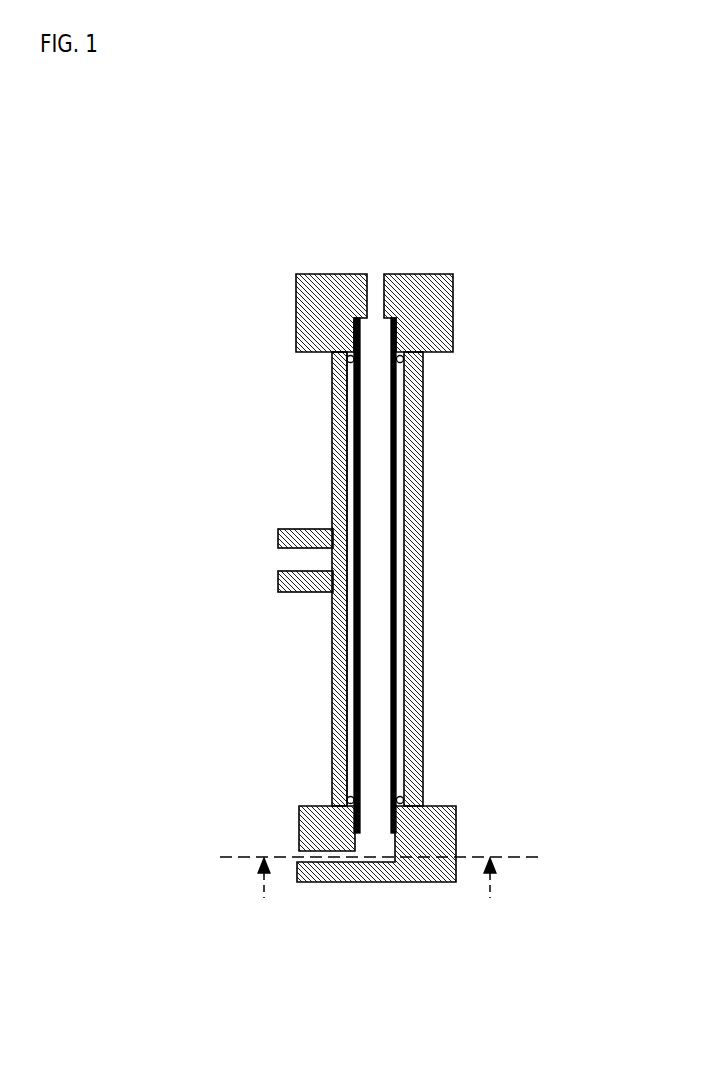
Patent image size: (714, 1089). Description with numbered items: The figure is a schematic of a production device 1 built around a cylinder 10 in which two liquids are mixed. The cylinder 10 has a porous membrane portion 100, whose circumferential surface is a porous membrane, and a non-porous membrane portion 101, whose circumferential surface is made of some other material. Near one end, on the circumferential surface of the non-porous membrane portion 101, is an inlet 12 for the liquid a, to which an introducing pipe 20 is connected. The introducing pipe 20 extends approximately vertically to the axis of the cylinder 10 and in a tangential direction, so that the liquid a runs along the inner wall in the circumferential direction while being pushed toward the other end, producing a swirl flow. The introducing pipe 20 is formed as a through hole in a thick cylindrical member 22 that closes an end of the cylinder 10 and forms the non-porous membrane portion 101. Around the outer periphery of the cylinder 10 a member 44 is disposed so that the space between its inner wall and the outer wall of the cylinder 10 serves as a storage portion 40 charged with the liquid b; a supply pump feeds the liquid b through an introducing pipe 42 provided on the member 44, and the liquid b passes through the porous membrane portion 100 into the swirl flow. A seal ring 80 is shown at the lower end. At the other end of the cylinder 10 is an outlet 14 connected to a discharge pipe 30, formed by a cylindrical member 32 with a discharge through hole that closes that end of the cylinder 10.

The production device 1 is at (160, 205).
The cylinder 10 is at (373, 548).
The inlet 12 is at (357, 860).
The outlet 14 is at (375, 320).
The introducing pipe 20 is at (322, 860).
The member constituting the introducing pipe 22 is at (409, 870).
The discharge pipe 30 is at (377, 290).
The member constituting the discharge pipe 32 is at (312, 302).
The storage portion 40 is at (342, 428).
The introducing pipe for the liquid b 42 is at (302, 560).
The member constituting the storage portion 44 is at (416, 459).
The seal ring 80 is at (332, 783).
The porous membrane portion 100 is at (386, 593).
The non-porous membrane portion 101 is at (380, 845).